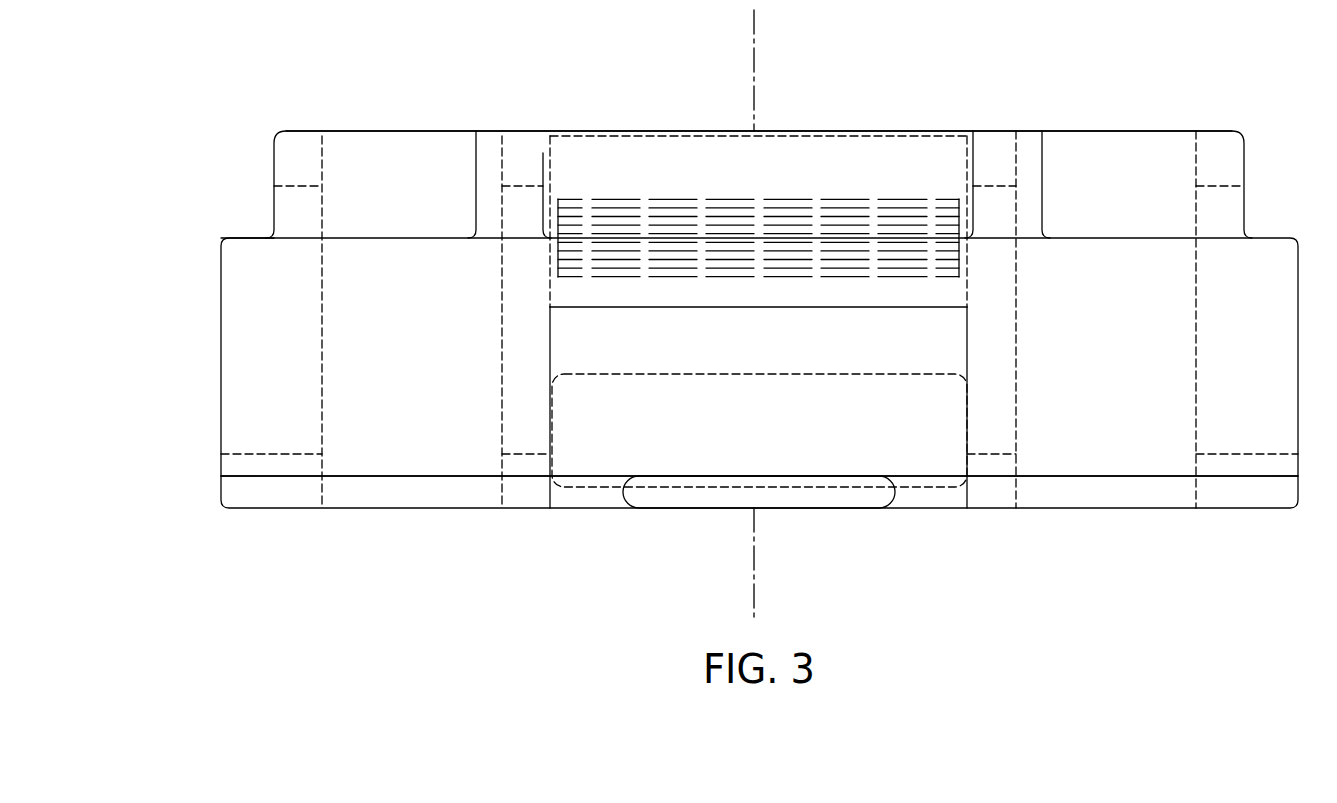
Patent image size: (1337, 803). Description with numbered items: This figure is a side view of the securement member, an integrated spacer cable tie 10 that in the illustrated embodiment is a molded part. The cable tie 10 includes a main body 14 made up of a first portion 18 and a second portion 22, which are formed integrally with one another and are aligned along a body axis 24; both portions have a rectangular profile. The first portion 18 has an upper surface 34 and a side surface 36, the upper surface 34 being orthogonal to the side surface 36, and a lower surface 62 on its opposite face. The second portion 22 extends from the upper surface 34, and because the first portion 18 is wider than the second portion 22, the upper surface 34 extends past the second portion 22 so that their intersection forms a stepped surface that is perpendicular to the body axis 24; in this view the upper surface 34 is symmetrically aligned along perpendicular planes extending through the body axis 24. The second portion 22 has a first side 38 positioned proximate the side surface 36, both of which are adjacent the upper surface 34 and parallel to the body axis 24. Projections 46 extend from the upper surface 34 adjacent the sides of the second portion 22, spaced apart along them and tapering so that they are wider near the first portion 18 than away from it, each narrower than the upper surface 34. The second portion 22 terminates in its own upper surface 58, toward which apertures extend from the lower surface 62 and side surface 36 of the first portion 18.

The integrated spacer cable tie 10 is at (112, 84).
The main body 14 is at (1258, 108).
The first portion 18 is at (200, 375).
The second portion 22 is at (258, 148).
The body axis 24 is at (754, 62).
The upper surface 34 is at (243, 238).
The side surface 36 is at (393, 440).
The first side 38 is at (400, 154).
The projections 46 is at (528, 153).
The upper surface 58 is at (1113, 131).
The lower surface 62 is at (243, 510).